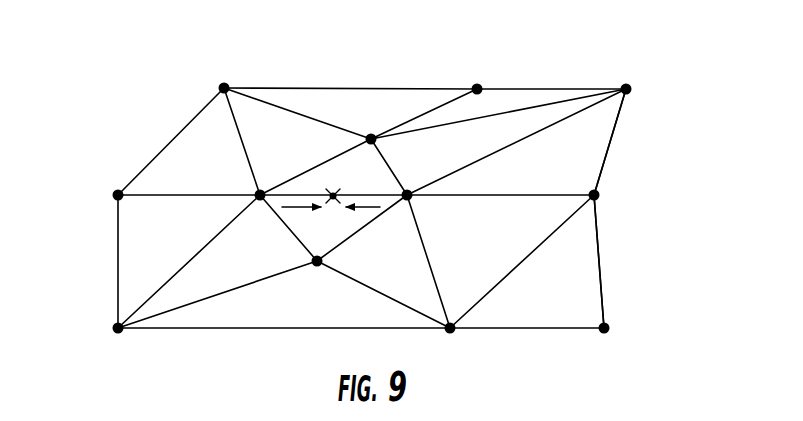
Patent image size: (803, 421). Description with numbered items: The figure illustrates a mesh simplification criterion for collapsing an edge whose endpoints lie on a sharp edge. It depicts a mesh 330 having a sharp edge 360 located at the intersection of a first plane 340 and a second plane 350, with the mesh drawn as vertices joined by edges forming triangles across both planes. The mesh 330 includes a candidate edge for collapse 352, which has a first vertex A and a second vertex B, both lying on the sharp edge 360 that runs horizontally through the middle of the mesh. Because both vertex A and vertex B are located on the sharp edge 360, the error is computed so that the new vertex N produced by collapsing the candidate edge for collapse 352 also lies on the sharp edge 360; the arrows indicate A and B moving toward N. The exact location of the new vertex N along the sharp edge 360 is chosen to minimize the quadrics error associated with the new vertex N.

The mesh 330 is at (108, 130).
The first plane 340 is at (608, 153).
The second plane 350 is at (599, 254).
The candidate edge for collapse 352 is at (293, 196).
The sharp edge 360 is at (594, 195).